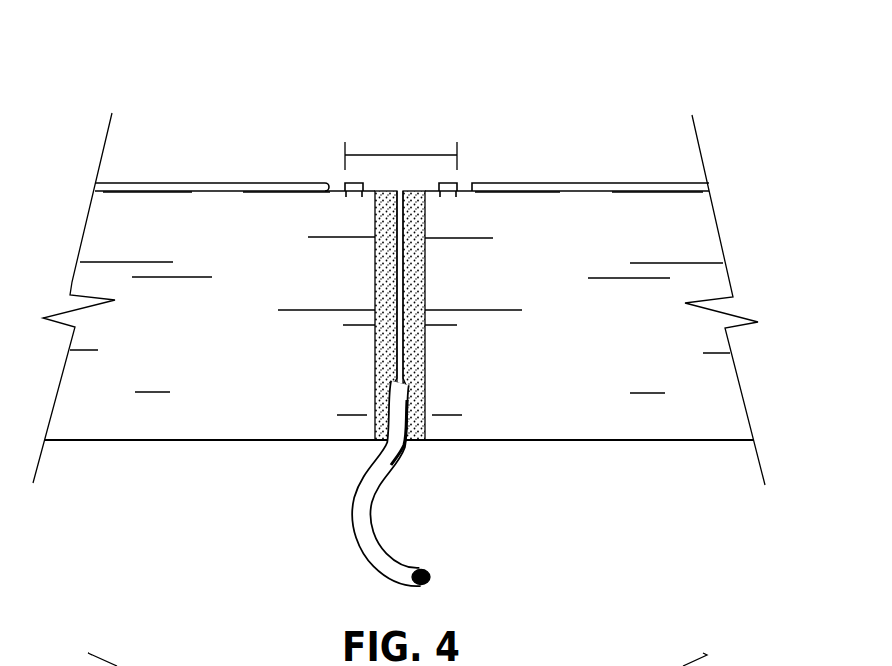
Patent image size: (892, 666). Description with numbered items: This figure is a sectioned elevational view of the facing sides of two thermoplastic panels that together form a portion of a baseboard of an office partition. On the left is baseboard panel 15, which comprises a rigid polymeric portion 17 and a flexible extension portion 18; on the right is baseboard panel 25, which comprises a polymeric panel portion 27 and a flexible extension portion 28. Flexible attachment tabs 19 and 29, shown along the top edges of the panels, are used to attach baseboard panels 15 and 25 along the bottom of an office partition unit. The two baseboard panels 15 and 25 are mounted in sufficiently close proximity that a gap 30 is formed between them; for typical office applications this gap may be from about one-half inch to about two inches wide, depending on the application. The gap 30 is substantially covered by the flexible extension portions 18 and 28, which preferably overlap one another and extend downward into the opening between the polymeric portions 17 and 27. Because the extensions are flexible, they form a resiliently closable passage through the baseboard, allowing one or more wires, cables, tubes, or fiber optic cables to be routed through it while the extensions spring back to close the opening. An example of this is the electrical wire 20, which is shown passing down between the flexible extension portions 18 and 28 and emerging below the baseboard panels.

The baseboard panel 15 is at (273, 178).
The baseboard panel 25 is at (643, 173).
The polymeric portion 17 is at (213, 441).
The polymeric panel portion 27 is at (612, 443).
The flexible extension portion 18 is at (390, 370).
The flexible extension portion 28 is at (413, 283).
The flexible attachment tab 19 is at (344, 188).
The flexible attachment tab 29 is at (455, 190).
The gap 30 is at (401, 151).
The electrical wire 20 is at (390, 555).